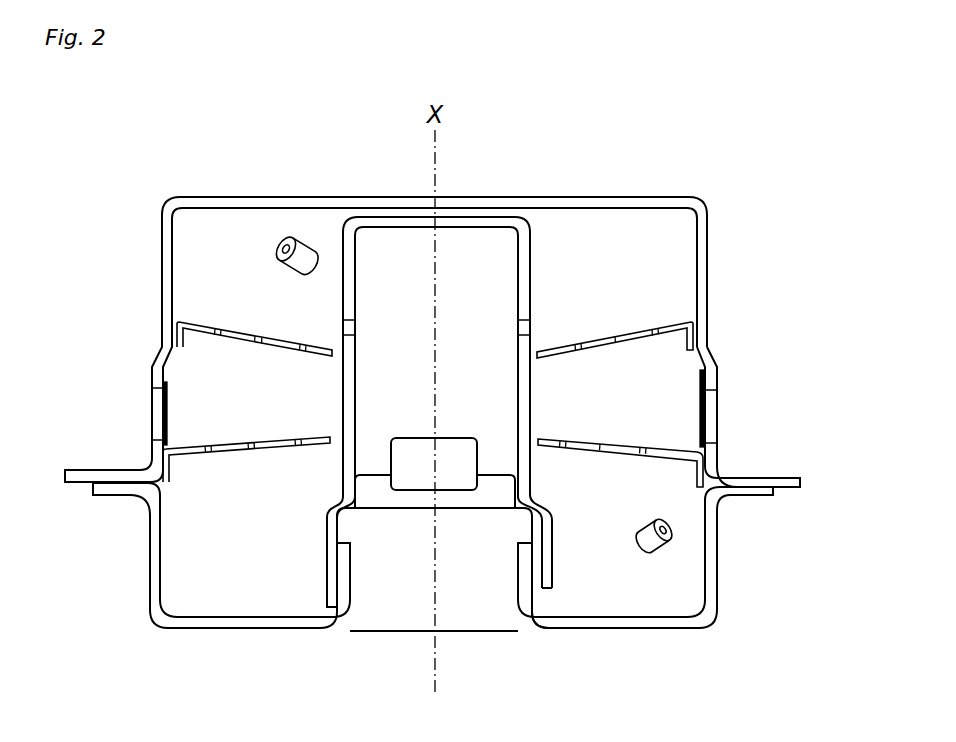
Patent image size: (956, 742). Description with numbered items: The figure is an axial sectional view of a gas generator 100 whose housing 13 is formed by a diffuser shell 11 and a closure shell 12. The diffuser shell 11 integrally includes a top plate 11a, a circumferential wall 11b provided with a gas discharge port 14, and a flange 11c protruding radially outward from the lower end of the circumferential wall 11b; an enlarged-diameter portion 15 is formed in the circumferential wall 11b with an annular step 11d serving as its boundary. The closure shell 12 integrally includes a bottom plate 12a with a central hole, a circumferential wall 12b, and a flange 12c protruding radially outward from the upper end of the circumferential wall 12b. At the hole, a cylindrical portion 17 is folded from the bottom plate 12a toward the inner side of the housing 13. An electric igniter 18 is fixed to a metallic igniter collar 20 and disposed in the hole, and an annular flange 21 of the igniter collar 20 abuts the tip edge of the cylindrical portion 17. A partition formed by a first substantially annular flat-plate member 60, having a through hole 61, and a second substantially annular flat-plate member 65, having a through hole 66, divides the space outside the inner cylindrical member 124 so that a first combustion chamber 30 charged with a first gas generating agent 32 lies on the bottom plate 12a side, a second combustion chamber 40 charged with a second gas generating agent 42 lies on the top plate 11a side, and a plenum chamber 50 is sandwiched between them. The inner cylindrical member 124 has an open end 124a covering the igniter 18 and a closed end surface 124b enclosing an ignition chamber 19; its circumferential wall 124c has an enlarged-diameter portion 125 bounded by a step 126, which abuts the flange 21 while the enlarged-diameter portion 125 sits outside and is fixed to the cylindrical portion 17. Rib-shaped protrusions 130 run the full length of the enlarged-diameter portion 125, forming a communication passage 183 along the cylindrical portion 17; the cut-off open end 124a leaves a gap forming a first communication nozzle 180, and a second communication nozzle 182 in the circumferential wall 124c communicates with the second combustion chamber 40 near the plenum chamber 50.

The gas generator 100 is at (634, 186).
The diffuser shell 11 is at (718, 457).
The top plate 11a is at (562, 197).
The circumferential wall 11b is at (708, 250).
The flange 11c is at (752, 477).
The annular step 11d is at (714, 352).
The closure shell 12 is at (718, 548).
The bottom plate 12a is at (638, 628).
The circumferential wall 12b is at (714, 575).
The flange 12c is at (752, 496).
The housing 13 is at (845, 435).
The gas discharge port 14 is at (708, 408).
The enlarged-diameter portion 15 is at (160, 376).
The cylindrical portion 17 is at (345, 588).
The electric igniter 18 is at (421, 478).
The ignition chamber 19 is at (388, 346).
The igniter collar 20 is at (456, 575).
The annular flange 21 is at (542, 516).
The first combustion chamber 30 is at (196, 570).
The first gas generating agent 32 is at (659, 548).
The second combustion chamber 40 is at (640, 293).
The second gas generating agent 42 is at (308, 247).
The plenum chamber 50 is at (231, 405).
The first substantially annular flat-plate member 60 is at (184, 326).
The through hole 61 is at (295, 352).
The second substantially annular flat-plate member 65 is at (180, 455).
The through hole 66 is at (300, 445).
The inner cylindrical member 124 is at (388, 222).
The open end 124a is at (332, 612).
The closed end surface 124b is at (448, 214).
The circumferential wall 124c is at (530, 252).
The enlarged-diameter portion 125 is at (336, 563).
The step 126 is at (336, 497).
The rib-shaped protrusion 130 is at (549, 572).
The first communication nozzle 180 is at (548, 605).
The second communication nozzle 182 is at (528, 326).
The communication passage 183 is at (531, 627).